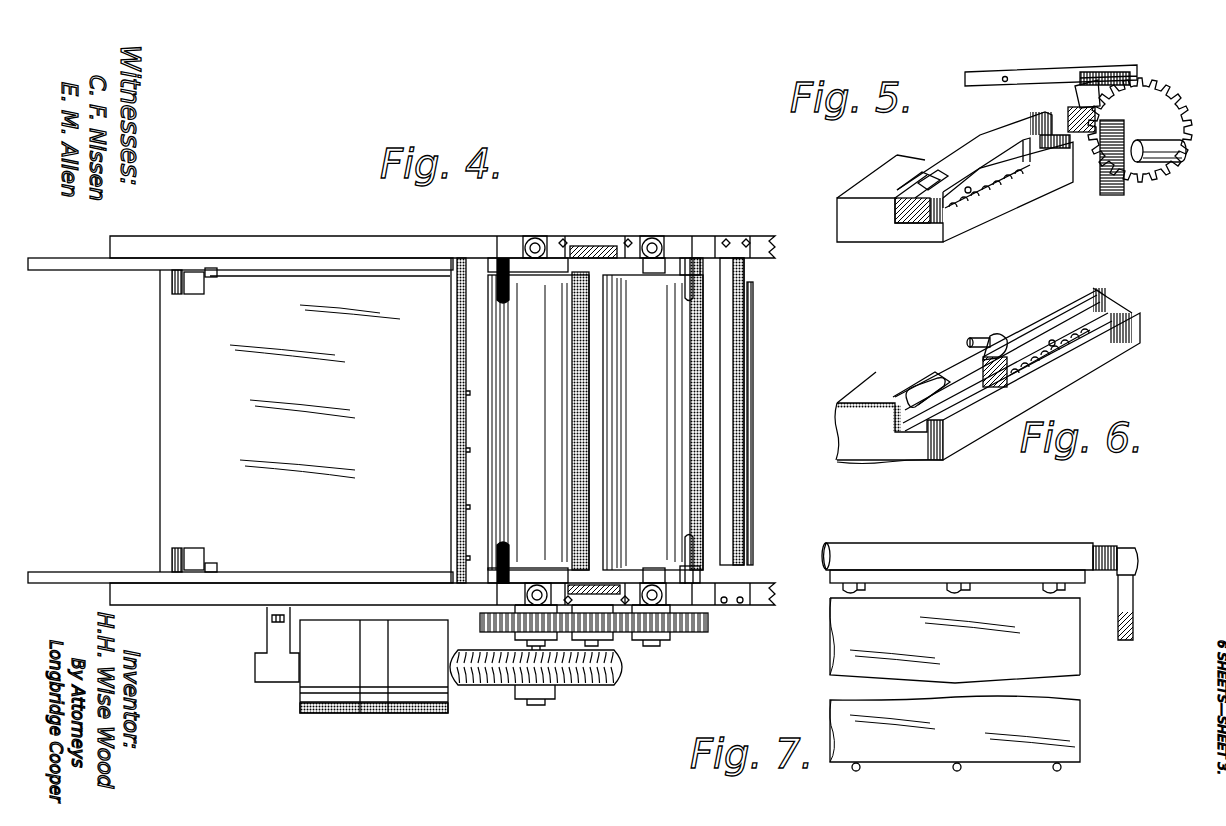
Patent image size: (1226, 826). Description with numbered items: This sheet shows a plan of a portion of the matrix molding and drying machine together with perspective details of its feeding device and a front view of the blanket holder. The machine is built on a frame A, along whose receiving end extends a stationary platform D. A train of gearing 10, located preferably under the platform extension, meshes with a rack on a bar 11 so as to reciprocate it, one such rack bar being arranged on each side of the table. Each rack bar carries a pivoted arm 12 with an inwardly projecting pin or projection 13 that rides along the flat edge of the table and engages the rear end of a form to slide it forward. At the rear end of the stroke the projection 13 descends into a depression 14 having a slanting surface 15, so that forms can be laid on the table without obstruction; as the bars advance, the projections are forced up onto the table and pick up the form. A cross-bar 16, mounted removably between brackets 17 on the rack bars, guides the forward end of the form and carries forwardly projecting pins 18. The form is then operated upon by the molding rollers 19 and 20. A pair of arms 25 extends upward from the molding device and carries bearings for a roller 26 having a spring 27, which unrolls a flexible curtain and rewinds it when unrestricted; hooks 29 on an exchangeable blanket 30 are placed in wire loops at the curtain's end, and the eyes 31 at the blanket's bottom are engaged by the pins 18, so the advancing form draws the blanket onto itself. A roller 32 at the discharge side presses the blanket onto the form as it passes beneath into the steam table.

In FIG. 4, the frame A is at (306, 243).
In FIG. 4, the stationary platform D is at (305, 421).
In FIG. 5, the stationary platform D is at (855, 185).
In FIG. 6, the stationary platform D is at (872, 378).
In FIG. 5, the train of gearing 10 is at (1142, 124).
In FIG. 4, the rack bar 11 is at (88, 268).
In FIG. 5, the rack bar 11 is at (1138, 88).
In FIG. 6, the rack bar 11 is at (1063, 322).
In FIG. 4, the pivoted arm 12 is at (198, 268).
In FIG. 5, the pivoted arm 12 is at (962, 208).
In FIG. 6, the pivoted arm 12 is at (1003, 335).
In FIG. 4, the pin or projection 13 is at (176, 293).
In FIG. 5, the pin or projection 13 is at (895, 208).
In FIG. 6, the pin or projection 13 is at (976, 338).
In FIG. 4, the depression 14 is at (196, 290).
In FIG. 5, the depression 14 is at (880, 196).
In FIG. 6, the depression 14 is at (906, 387).
In FIG. 5, the slanting surface 15 is at (925, 186).
In FIG. 6, the slanting surface 15 is at (932, 388).
In FIG. 4, the cross-bar 16 is at (450, 416).
In FIG. 5, the cross-bar 16 is at (1000, 82).
In FIG. 4, the brackets 17 is at (462, 262).
In FIG. 5, the brackets 17 is at (1096, 92).
In FIG. 4, the forwardly projecting pins 18 is at (466, 508).
In FIG. 5, the forwardly projecting pins 18 is at (1016, 72).
In FIG. 4, the molding roller 19 is at (538, 421).
In FIG. 4, the molding roller 20 is at (653, 414).
In FIG. 4, the arms 25 is at (606, 248).
In FIG. 7, the arms 25 is at (1130, 604).
In FIG. 7, the roller 26 is at (1017, 548).
In FIG. 7, the spring 27 is at (1106, 550).
In FIG. 7, the hooks 29 is at (843, 590).
In FIG. 7, the exchangeable blanket 30 is at (1066, 720).
In FIG. 7, the eyes 31 is at (855, 771).
In FIG. 4, the roller 32 is at (742, 316).